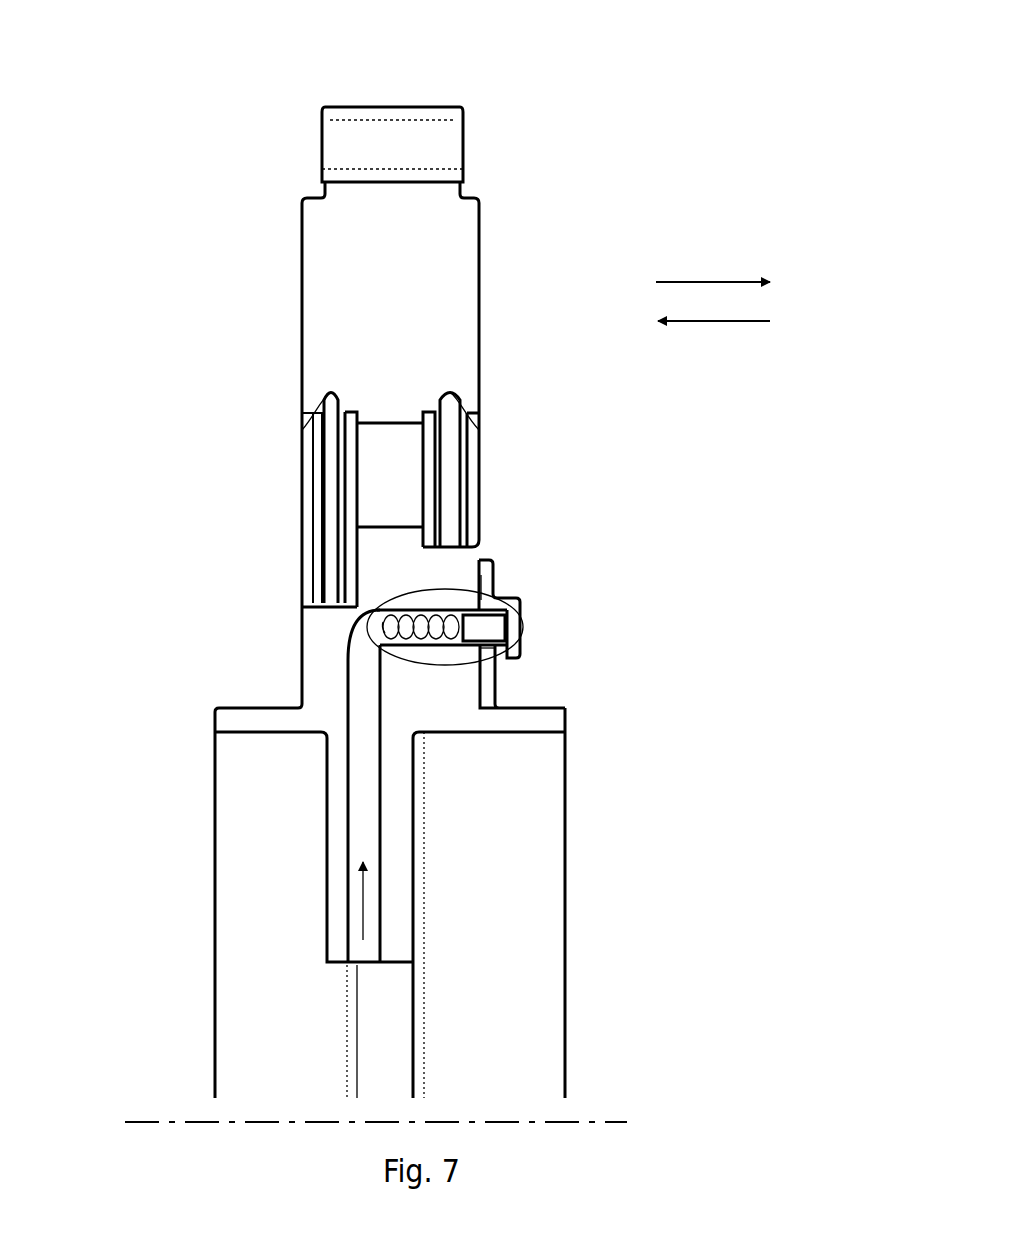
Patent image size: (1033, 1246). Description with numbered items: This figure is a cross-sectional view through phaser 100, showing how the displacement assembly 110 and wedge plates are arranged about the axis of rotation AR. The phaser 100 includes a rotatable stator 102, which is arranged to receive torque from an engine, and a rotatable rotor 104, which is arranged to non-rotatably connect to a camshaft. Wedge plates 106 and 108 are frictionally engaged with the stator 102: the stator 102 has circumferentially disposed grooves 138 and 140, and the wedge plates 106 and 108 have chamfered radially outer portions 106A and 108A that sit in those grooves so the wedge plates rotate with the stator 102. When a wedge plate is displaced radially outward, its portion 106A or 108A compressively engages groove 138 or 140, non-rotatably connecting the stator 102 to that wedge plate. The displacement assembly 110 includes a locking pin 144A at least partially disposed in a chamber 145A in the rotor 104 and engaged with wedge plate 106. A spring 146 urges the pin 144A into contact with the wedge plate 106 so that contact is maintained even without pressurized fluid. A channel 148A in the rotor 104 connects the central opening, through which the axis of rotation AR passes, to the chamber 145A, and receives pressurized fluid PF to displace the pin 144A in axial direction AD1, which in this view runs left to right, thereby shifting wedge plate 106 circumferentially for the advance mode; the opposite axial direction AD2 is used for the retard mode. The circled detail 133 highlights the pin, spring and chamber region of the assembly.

The phaser 100 is at (664, 69).
The rotatable stator 102 is at (392, 107).
The rotatable rotor 104 is at (302, 665).
The wedge plate 106 is at (470, 512).
The chamfered radially outer portion 106A is at (451, 398).
The wedge plate 108 is at (313, 562).
The chamfered radially outer portion 108A is at (329, 398).
The displacement assembly 110 is at (414, 606).
The valve assembly 133 is at (524, 612).
The circumferentially disposed groove 138 is at (450, 392).
The circumferentially disposed groove 140 is at (331, 392).
The locking pin 144A is at (492, 650).
The chamber 145A is at (465, 650).
The spring 146 is at (474, 582).
The channel 148A is at (365, 805).
The pressurized fluid PF is at (362, 912).
The axis of rotation AR is at (612, 1118).
The axial direction AD1 is at (705, 282).
The axial direction AD2 is at (722, 321).